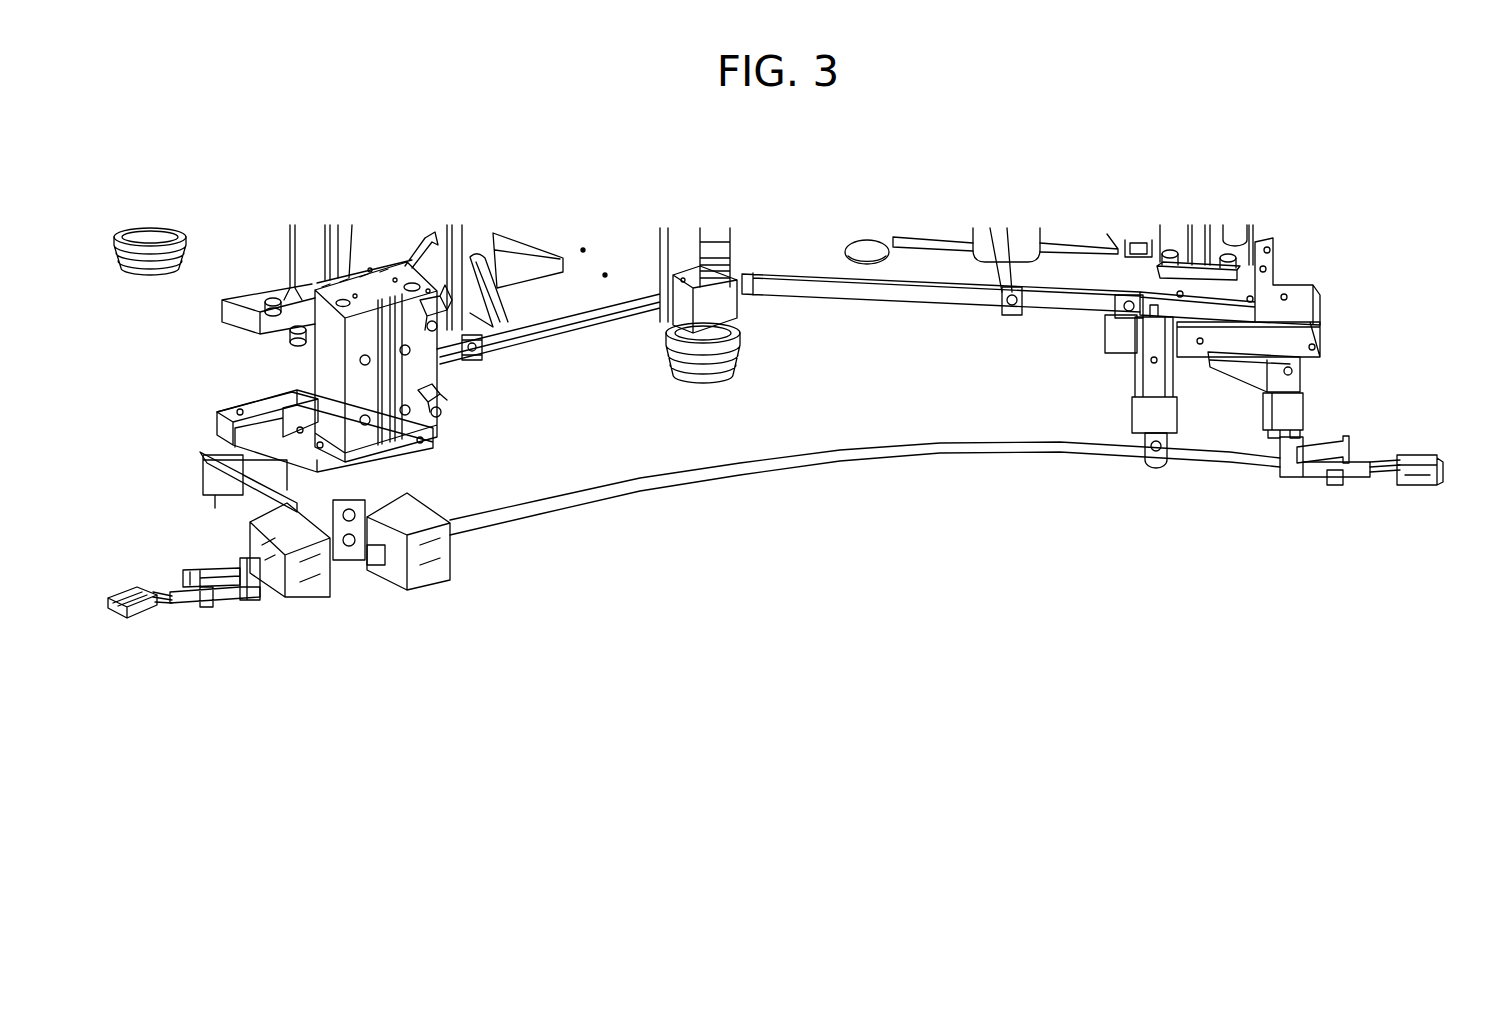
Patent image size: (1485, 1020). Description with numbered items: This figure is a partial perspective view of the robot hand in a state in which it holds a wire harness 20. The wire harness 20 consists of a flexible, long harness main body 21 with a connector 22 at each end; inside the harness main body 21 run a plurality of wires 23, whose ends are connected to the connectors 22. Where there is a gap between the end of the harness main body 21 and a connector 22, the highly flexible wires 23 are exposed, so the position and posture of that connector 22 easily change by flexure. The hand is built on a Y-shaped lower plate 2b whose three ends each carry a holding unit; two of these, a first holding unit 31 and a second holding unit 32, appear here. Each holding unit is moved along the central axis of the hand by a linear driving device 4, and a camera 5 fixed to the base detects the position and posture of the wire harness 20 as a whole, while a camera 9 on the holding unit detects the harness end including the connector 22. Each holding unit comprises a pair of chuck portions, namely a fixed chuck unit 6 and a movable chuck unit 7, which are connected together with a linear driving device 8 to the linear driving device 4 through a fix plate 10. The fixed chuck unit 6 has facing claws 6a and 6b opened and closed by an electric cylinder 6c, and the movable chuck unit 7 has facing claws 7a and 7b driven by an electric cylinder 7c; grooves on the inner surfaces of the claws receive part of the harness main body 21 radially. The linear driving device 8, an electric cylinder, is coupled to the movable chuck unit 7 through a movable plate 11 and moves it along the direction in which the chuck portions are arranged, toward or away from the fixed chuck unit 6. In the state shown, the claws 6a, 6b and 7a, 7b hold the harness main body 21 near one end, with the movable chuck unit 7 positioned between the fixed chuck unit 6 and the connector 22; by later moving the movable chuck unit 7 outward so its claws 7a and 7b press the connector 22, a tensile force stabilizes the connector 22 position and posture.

The lower plate 2b is at (895, 297).
The linear driving device 4 is at (422, 372).
The camera (entire-body detection unit) 5 is at (743, 358).
The fixed chuck unit 6 is at (443, 503).
The claw 6a is at (347, 557).
The claw 6b is at (377, 553).
The electric cylinder 6c is at (447, 553).
The movable chuck unit 7 is at (270, 602).
The claw 7a is at (217, 566).
The claw 7b is at (230, 603).
The electric cylinder 7c is at (313, 577).
The linear driving device (driving unit) 8 is at (1303, 332).
The camera (partial detection unit) 9 is at (182, 242).
The fix plate 10 is at (1298, 292).
The movable plate 11 is at (1290, 377).
The wire harness 20 is at (865, 496).
The harness main body 21 is at (753, 468).
The connector 22 is at (128, 620).
The wire 23 is at (153, 592).
The first holding unit 31 is at (215, 383).
The second holding unit 32 is at (1428, 350).